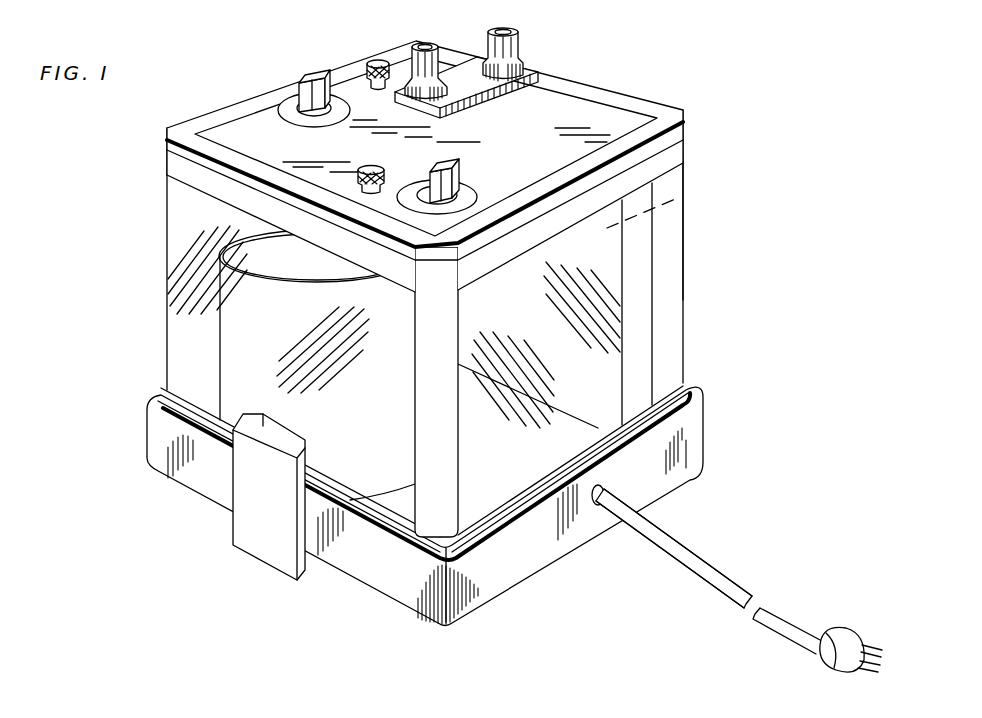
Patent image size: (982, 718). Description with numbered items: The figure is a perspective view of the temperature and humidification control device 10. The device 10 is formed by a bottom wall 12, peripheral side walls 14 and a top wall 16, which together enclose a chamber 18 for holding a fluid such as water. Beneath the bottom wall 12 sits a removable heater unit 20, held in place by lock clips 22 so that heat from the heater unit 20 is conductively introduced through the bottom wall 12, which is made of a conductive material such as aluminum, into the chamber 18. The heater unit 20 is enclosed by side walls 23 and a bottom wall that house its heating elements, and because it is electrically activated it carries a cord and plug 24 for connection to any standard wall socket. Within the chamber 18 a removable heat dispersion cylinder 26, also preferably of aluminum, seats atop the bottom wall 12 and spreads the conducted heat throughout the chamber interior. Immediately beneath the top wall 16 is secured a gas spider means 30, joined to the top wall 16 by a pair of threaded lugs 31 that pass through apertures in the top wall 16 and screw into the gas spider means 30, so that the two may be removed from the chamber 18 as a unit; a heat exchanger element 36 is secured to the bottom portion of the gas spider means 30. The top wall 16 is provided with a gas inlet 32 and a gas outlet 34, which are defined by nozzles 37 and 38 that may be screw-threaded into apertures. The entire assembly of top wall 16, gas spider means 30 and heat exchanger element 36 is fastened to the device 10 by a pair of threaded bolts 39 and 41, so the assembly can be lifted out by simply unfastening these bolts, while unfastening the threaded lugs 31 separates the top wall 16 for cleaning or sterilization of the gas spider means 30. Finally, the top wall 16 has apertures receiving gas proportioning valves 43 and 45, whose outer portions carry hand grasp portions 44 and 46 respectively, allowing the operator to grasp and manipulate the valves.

The device 10 is at (684, 288).
The bottom wall 12 is at (487, 478).
The peripheral side walls 14 is at (276, 88).
The top wall 16 is at (545, 100).
The chamber 18 is at (680, 197).
The heater unit 20 is at (683, 433).
The lock clips 22 is at (268, 548).
The side walls 23 is at (687, 458).
The cord and plug 24 is at (790, 628).
The heat dispersion cylinder 26 is at (232, 323).
The gas spider means 30 is at (193, 177).
The threaded lugs 31 is at (378, 62).
The gas inlet 32 is at (423, 47).
The gas outlet 34 is at (513, 40).
The heat exchanger element 36 is at (637, 323).
The nozzle 37 is at (430, 45).
The nozzle 38 is at (517, 44).
The threaded bolt 39 is at (425, 166).
The threaded bolt 41 is at (446, 146).
The gas proportioning valve 43 is at (335, 70).
The hand grasp portion 44 is at (296, 108).
The gas proportioning valve 45 is at (472, 180).
The hand grasp portion 46 is at (453, 180).